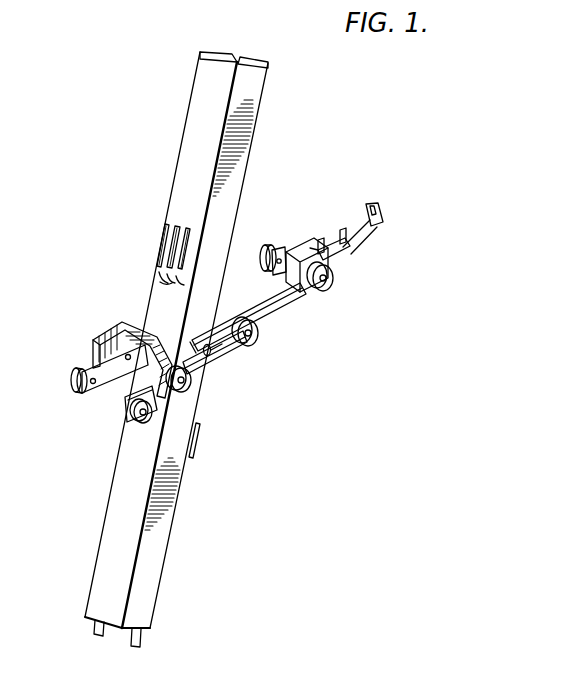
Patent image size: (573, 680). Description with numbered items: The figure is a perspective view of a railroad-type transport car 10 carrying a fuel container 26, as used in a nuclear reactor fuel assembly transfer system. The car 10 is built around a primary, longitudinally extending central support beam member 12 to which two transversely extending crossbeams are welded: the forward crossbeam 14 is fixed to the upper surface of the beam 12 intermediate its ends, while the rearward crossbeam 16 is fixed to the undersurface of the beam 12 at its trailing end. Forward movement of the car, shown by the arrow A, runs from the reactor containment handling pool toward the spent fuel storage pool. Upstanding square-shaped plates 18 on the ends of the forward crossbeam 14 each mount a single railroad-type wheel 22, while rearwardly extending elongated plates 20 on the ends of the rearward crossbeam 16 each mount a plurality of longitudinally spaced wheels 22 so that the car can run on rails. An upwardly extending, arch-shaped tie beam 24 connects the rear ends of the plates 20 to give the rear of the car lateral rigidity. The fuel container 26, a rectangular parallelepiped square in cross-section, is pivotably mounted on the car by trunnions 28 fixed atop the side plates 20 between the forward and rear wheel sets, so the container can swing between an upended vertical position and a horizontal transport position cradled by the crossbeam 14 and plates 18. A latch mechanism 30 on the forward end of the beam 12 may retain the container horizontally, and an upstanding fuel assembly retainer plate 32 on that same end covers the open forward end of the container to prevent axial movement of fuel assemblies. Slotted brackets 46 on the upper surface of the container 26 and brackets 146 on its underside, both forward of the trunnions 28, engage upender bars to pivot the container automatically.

The transport car 10 is at (296, 217).
The central support beam member 12 is at (260, 305).
The forward crossbeam member 14 is at (290, 263).
The rearward crossbeam member 16 is at (220, 359).
The upstanding square-shaped plates 18 is at (293, 250).
The rearwardly extending elongated plates 20 is at (107, 379).
The railroad-type wheels 22 is at (78, 372).
The arch-shaped tie beam 24 is at (132, 318).
The fuel container 26 is at (262, 127).
The trunnions 28 is at (228, 352).
The latch mechanism 30 is at (336, 263).
The fuel assembly retainer plate 32 is at (382, 220).
The brackets 46 is at (175, 281).
The brackets 146 is at (201, 443).
The arrow A is at (453, 183).